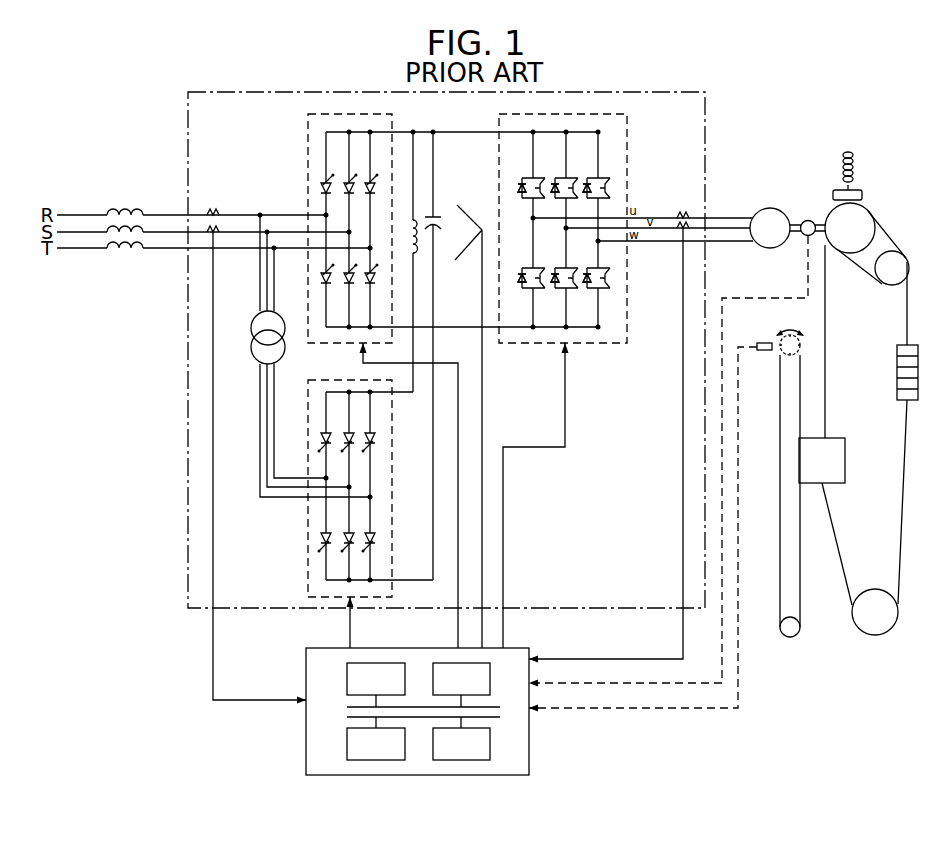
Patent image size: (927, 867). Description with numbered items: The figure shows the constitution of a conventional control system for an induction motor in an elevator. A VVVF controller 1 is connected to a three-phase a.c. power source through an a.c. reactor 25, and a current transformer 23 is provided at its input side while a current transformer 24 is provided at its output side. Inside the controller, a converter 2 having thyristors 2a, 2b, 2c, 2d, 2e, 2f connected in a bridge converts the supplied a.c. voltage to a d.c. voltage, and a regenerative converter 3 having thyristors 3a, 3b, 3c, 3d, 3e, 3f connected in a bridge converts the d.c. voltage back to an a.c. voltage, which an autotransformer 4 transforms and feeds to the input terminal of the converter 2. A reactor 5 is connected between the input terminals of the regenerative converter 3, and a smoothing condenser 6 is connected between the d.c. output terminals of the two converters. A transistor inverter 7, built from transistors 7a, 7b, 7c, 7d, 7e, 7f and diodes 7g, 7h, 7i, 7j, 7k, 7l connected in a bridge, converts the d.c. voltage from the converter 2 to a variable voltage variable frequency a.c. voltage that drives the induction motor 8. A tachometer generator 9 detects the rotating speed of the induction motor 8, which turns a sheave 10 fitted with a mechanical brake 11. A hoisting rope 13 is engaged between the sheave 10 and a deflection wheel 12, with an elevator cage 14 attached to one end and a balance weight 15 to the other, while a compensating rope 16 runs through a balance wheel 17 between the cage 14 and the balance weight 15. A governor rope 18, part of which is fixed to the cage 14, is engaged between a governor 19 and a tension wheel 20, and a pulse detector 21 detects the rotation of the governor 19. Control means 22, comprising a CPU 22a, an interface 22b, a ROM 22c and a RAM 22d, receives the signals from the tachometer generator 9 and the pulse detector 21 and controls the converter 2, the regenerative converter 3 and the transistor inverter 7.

The VVVF controller 1 is at (330, 92).
The converter 2 is at (433, 236).
The thyristor 2a is at (322, 181).
The thyristor 2b is at (346, 176).
The thyristor 2c is at (377, 175).
The thyristor 2d is at (330, 287).
The thyristor 2e is at (356, 268).
The thyristor 2f is at (372, 287).
The regenerative converter 3 is at (359, 509).
The thyristor 3a is at (329, 434).
The thyristor 3b is at (352, 441).
The thyristor 3c is at (373, 441).
The thyristor 3d is at (329, 541).
The thyristor 3e is at (352, 541).
The thyristor 3f is at (373, 539).
The autotransformer 4 is at (284, 347).
The reactor 5 is at (413, 255).
The smoothing condenser 6 is at (433, 213).
The transistor inverter 7 is at (551, 224).
The transistor 7a is at (527, 176).
The transistor 7b is at (560, 176).
The transistor 7c is at (593, 176).
The transistor 7d is at (527, 268).
The transistor 7e is at (560, 268).
The transistor 7f is at (593, 268).
The diode 7g is at (522, 198).
The diode 7h is at (555, 198).
The diode 7i is at (587, 198).
The diode 7j is at (522, 288).
The diode 7k is at (555, 288).
The diode 7l is at (587, 288).
The induction motor 8 is at (770, 207).
The tachometer generator 9 is at (808, 220).
The sheave 10 is at (868, 210).
The mechanical brake 11 is at (844, 160).
The deflection wheel 12 is at (880, 285).
The hoisting rope 13 is at (827, 338).
The elevator cage 14 is at (846, 450).
The balance weight 15 is at (897, 346).
The compensating rope 16 is at (845, 556).
The balance wheel 17 is at (880, 632).
The governor rope 18 is at (779, 592).
The governor 19 is at (778, 355).
The tension wheel 20 is at (801, 634).
The pulse detector 21 is at (760, 341).
The control means 22 is at (440, 698).
The CPU 22a is at (347, 678).
The interface 22b is at (490, 680).
The ROM 22c is at (347, 748).
The RAM 22d is at (490, 745).
The current transformer 23 is at (213, 208).
The current transformer 24 is at (683, 214).
The a.c. reactor 25 is at (130, 206).